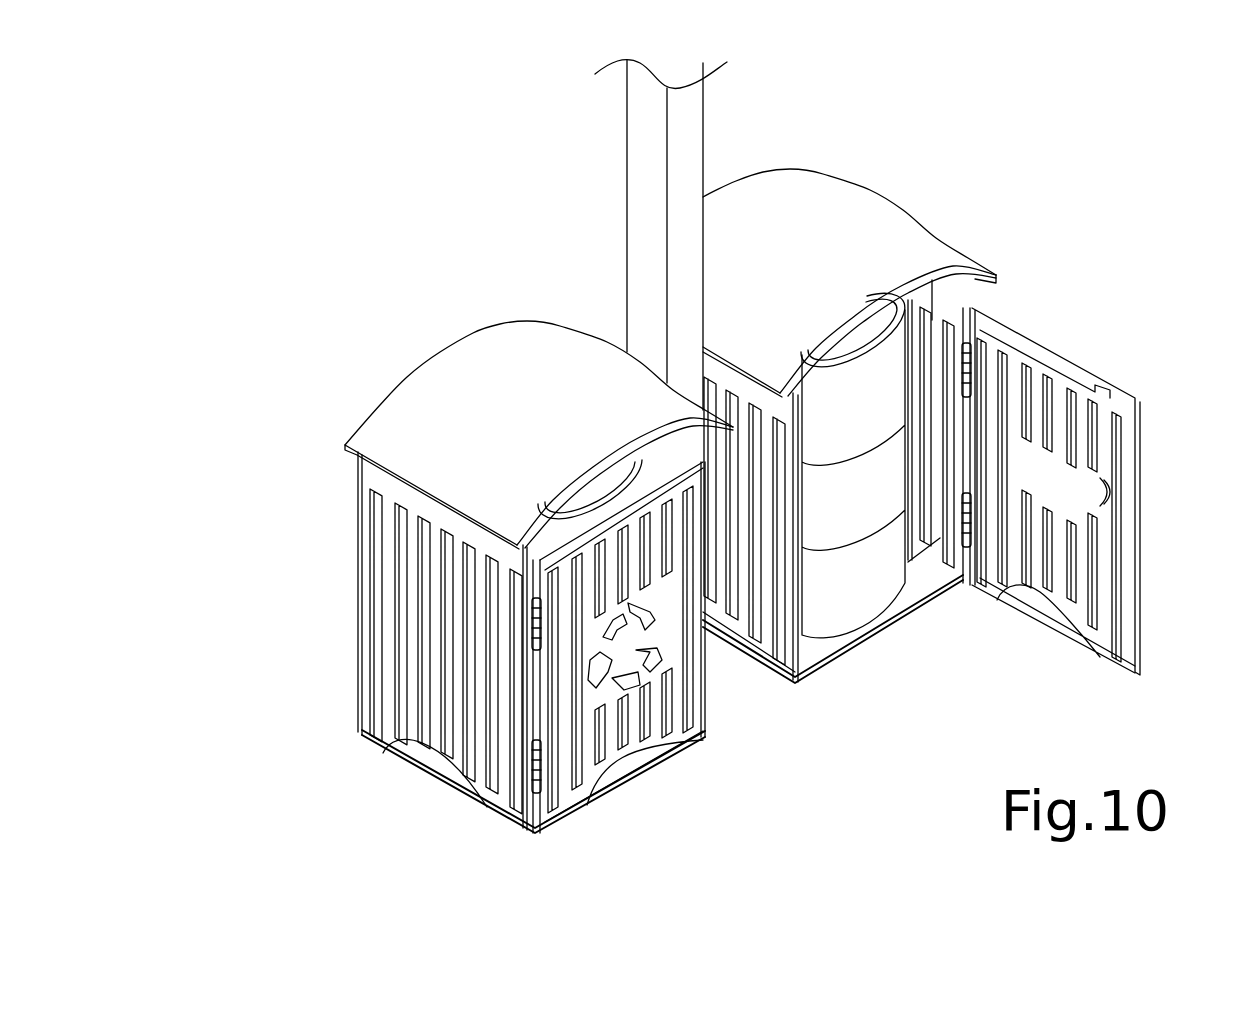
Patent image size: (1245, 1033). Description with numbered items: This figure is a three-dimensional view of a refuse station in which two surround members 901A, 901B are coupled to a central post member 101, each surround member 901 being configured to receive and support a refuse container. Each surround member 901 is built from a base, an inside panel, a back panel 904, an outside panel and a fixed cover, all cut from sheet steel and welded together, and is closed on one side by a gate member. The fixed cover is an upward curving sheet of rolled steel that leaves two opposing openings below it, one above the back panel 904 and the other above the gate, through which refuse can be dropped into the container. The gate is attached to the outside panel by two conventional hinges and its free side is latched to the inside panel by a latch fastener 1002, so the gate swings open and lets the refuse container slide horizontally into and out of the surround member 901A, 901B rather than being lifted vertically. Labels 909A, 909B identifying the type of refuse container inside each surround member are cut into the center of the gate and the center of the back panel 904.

The surround member 901 is at (258, 139).
The surround member 901A is at (297, 438).
The surround member 901B is at (1128, 227).
The post member 101 is at (650, 187).
The back panel 904 is at (362, 570).
The label 909A is at (657, 665).
The label 909B is at (1057, 465).
The latch fastener 1002 is at (1108, 495).